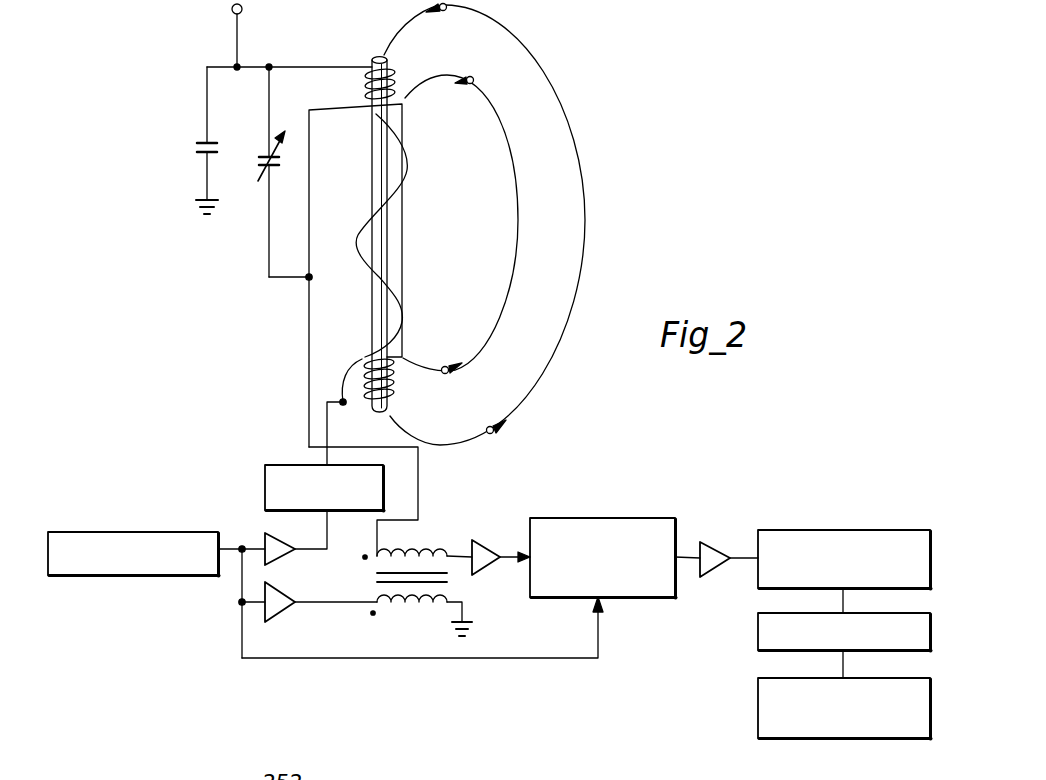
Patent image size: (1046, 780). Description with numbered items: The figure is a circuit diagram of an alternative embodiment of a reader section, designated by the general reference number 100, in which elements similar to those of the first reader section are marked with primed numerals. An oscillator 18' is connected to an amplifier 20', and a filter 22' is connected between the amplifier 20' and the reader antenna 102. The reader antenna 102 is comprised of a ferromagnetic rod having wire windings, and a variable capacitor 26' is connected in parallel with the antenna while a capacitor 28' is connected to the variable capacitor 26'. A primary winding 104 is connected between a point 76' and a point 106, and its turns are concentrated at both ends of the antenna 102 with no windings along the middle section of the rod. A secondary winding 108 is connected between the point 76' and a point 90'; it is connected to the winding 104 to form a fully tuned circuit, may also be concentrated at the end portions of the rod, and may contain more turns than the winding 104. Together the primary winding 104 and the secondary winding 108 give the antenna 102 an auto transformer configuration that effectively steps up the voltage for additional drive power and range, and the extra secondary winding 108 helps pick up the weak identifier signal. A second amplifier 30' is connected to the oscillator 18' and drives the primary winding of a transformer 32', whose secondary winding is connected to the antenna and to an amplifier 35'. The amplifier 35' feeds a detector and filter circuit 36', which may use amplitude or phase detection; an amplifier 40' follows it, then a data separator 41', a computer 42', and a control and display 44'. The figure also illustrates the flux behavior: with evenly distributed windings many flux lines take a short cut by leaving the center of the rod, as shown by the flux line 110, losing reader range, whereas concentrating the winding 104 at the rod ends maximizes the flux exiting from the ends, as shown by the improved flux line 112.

The oscillator 18' is at (135, 538).
The amplifier 20' is at (261, 540).
The filter 22' is at (313, 473).
The variable capacitor 26' is at (258, 172).
The capacitor 28' is at (187, 140).
The amplifier 30' is at (291, 594).
The transformer 32' is at (383, 592).
The amplifier 35' is at (493, 542).
The detector and filter circuit 36' is at (603, 542).
The amplifier 40' is at (729, 545).
The data separator 41' is at (844, 544).
The computer 42' is at (816, 632).
The control and display 44' is at (816, 708).
The point 76' is at (352, 381).
The point 90' is at (312, 278).
The reader section 100 is at (216, 593).
The reader antenna 102 is at (369, 172).
The primary winding 104 is at (400, 238).
The point 106 is at (280, 52).
The secondary winding 108 is at (403, 318).
The flux line 110 is at (518, 240).
The flux line 112 is at (585, 240).